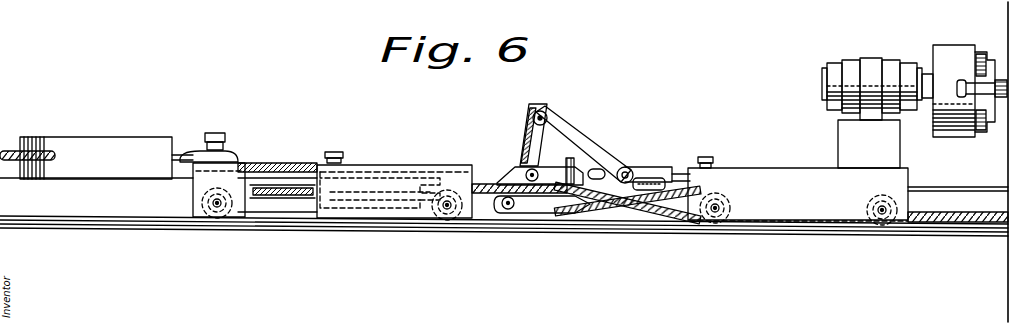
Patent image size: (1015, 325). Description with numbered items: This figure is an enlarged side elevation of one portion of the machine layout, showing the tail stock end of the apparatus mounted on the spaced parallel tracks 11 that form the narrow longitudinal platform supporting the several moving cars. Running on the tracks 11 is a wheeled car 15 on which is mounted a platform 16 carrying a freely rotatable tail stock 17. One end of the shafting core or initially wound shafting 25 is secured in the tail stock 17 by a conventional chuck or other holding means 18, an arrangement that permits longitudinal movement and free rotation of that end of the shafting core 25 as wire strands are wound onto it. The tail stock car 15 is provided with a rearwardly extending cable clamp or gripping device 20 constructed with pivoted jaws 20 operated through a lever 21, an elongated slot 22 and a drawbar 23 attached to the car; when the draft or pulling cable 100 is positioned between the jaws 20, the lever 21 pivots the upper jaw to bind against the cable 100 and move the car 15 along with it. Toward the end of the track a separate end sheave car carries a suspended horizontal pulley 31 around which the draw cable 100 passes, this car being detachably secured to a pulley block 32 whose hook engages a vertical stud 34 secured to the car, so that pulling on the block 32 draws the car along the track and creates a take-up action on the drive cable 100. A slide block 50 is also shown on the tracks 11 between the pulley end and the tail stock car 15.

The tracks 11 is at (92, 228).
The wheeled car 15 is at (785, 205).
The platform 16 is at (848, 150).
The tail stock 17 is at (947, 35).
The chuck 18 is at (995, 32).
The cable clamp 20 is at (552, 162).
The lever 21 is at (582, 145).
The elongated slot 22 is at (657, 166).
The drawbar 23 is at (676, 168).
The shafting core 25 is at (1006, 98).
The horizontal pulley 31 is at (290, 195).
The pulley block 32 is at (135, 143).
The vertical stud 34 is at (222, 138).
The slide block 50 is at (433, 157).
The draft cable 100 is at (643, 200).